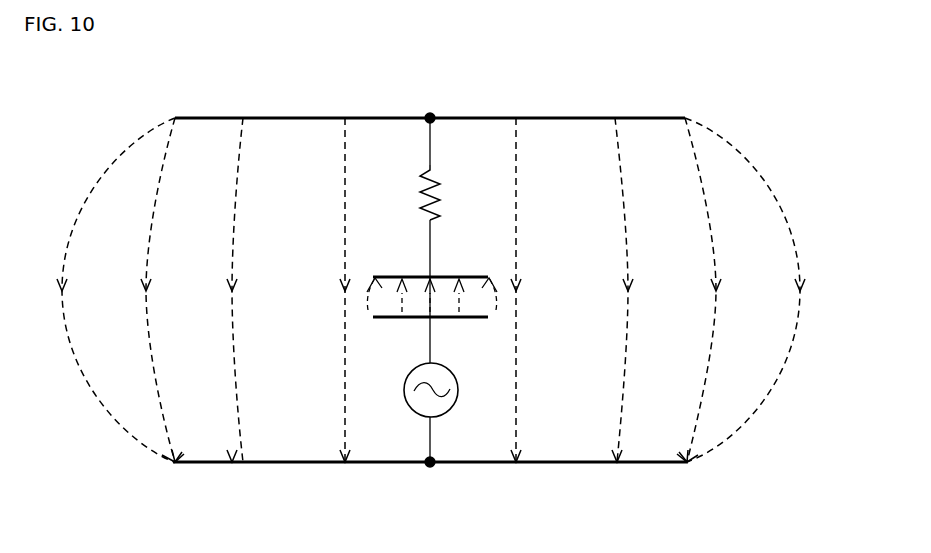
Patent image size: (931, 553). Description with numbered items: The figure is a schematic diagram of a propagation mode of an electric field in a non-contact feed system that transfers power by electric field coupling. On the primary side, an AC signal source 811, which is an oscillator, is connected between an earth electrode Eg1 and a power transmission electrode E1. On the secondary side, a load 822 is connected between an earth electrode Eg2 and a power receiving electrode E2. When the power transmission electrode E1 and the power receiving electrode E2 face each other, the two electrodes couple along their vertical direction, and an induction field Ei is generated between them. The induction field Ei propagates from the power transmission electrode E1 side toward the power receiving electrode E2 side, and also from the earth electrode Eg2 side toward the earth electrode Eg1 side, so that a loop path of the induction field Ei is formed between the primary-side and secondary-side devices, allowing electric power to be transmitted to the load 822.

The load 822 is at (408, 180).
The AC signal source 811 is at (406, 407).
The earth electrode Eg2 is at (480, 117).
The earth electrode Eg1 is at (485, 465).
The power receiving electrode E2 is at (440, 277).
The power transmission electrode E1 is at (440, 318).
The induction field Ei is at (748, 165).